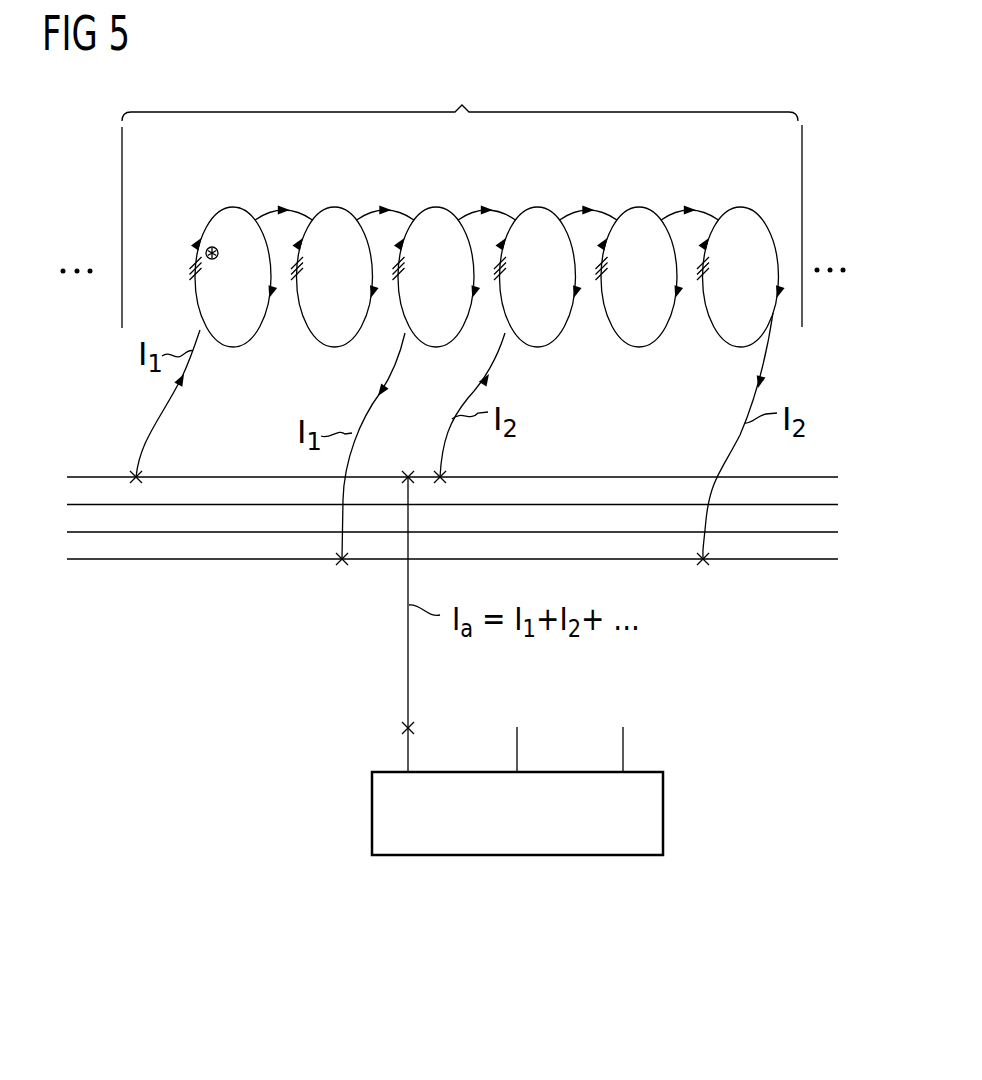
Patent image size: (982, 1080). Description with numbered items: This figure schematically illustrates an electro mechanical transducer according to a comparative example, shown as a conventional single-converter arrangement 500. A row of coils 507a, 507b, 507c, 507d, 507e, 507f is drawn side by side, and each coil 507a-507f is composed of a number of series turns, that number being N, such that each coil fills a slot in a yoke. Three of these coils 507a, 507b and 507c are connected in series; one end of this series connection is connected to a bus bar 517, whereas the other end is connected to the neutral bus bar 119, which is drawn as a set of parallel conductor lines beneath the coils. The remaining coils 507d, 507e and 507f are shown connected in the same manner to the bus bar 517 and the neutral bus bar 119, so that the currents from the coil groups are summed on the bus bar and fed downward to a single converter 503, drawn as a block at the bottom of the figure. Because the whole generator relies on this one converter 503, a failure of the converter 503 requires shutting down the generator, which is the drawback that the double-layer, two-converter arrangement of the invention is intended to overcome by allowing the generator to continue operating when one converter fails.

The coil arrangement / antenna array 500 is at (462, 199).
The coil 507a is at (233, 207).
The coil 507b is at (334, 207).
The coil 507c is at (436, 207).
The coil 507d is at (538, 207).
The coil 507e is at (639, 207).
The coil 507f is at (740, 207).
The bus bar 517 is at (88, 476).
The neutral bus bar 119 is at (108, 560).
The converter 503 is at (520, 856).